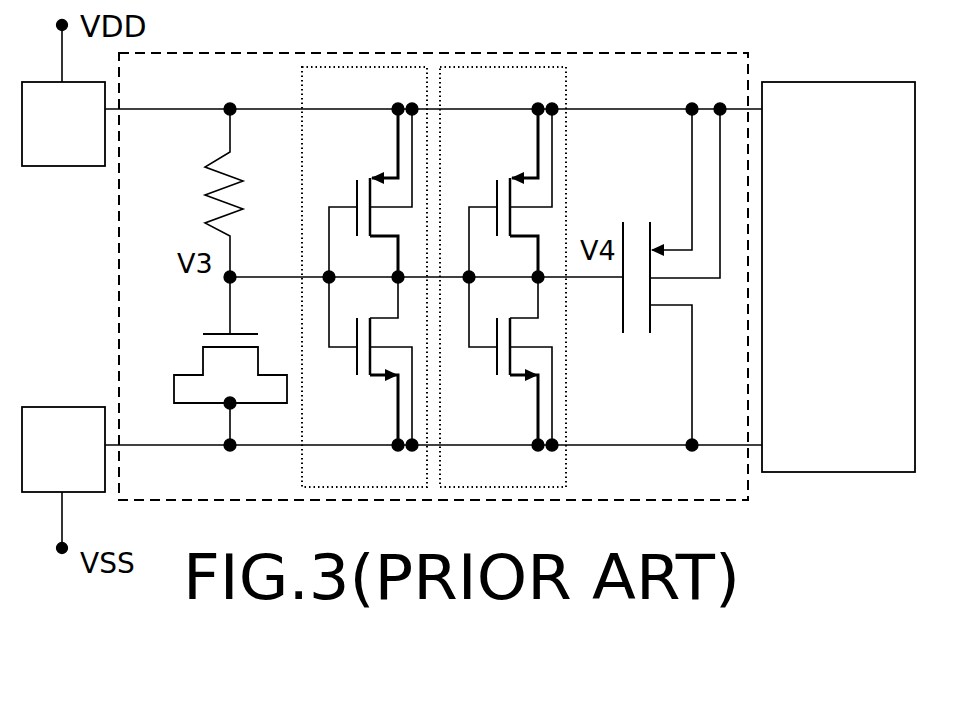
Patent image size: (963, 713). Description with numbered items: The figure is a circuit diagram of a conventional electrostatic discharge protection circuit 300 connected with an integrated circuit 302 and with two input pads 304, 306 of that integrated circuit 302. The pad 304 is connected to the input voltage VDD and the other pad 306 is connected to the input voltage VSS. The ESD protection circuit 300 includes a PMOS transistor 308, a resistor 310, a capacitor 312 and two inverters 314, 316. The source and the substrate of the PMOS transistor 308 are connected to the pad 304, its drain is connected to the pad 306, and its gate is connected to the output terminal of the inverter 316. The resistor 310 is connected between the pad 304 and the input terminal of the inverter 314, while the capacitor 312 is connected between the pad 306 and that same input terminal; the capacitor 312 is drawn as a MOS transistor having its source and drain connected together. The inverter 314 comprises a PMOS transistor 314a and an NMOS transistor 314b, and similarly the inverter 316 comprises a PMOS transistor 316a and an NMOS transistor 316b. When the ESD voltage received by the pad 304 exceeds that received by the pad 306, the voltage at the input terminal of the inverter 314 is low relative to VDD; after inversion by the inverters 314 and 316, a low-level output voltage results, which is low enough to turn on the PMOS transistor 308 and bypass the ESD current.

The ESD protection circuit 300 is at (748, 500).
The integrated circuit 302 is at (838, 277).
The input pad 304 is at (63, 124).
The input pad 306 is at (63, 449).
The PMOS transistor 308 is at (622, 307).
The resistor 310 is at (227, 137).
The capacitor 312 is at (218, 331).
The inverter 314 is at (333, 65).
The PMOS transistor 314a is at (357, 196).
The NMOS transistor 314b is at (357, 363).
The inverter 316 is at (470, 66).
The PMOS transistor 316a is at (497, 196).
The NMOS transistor 316b is at (497, 363).